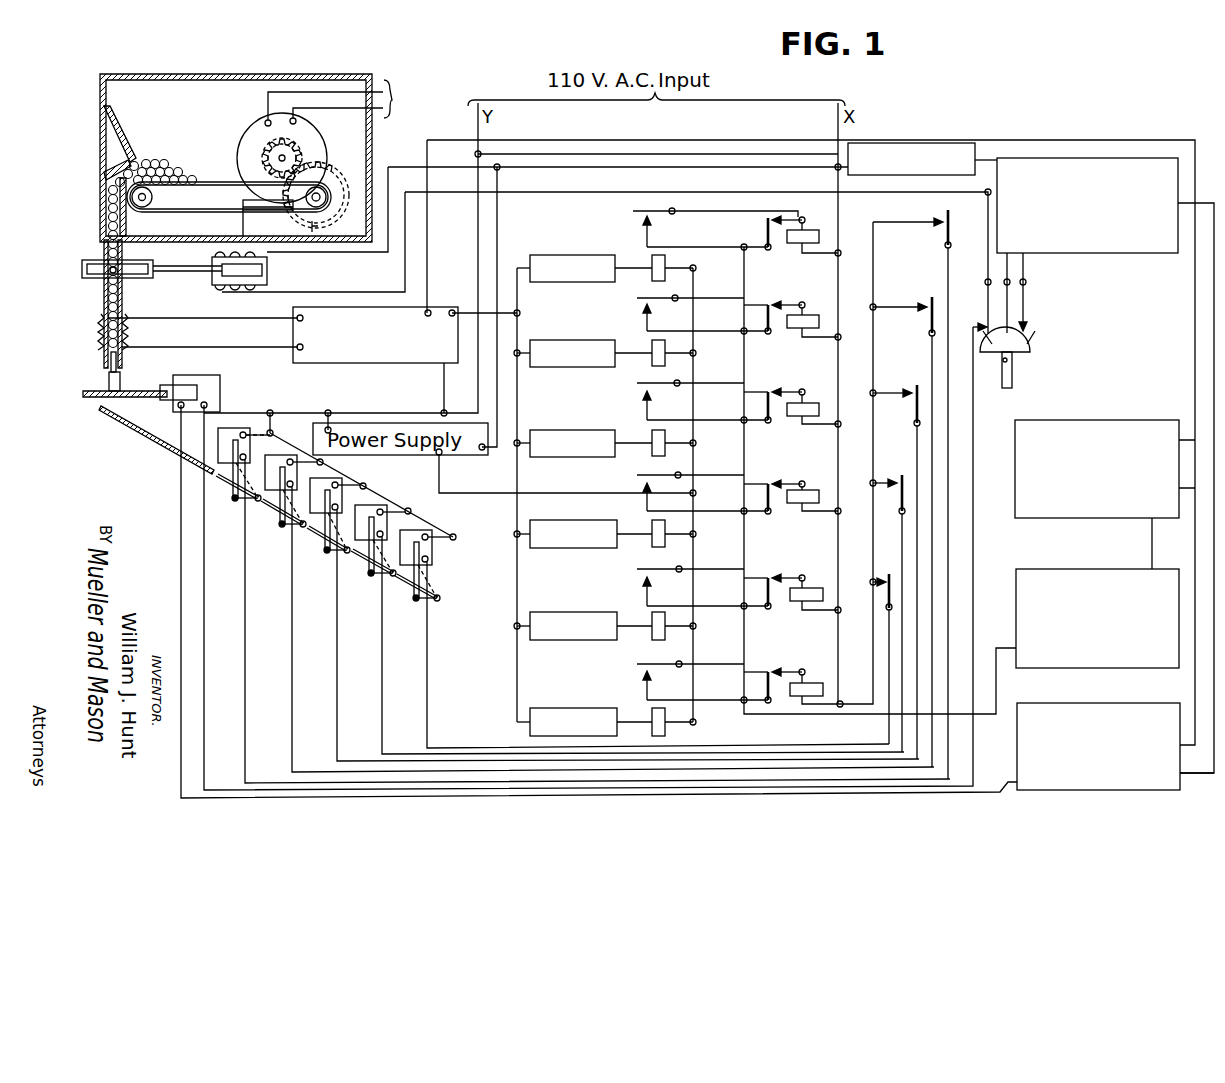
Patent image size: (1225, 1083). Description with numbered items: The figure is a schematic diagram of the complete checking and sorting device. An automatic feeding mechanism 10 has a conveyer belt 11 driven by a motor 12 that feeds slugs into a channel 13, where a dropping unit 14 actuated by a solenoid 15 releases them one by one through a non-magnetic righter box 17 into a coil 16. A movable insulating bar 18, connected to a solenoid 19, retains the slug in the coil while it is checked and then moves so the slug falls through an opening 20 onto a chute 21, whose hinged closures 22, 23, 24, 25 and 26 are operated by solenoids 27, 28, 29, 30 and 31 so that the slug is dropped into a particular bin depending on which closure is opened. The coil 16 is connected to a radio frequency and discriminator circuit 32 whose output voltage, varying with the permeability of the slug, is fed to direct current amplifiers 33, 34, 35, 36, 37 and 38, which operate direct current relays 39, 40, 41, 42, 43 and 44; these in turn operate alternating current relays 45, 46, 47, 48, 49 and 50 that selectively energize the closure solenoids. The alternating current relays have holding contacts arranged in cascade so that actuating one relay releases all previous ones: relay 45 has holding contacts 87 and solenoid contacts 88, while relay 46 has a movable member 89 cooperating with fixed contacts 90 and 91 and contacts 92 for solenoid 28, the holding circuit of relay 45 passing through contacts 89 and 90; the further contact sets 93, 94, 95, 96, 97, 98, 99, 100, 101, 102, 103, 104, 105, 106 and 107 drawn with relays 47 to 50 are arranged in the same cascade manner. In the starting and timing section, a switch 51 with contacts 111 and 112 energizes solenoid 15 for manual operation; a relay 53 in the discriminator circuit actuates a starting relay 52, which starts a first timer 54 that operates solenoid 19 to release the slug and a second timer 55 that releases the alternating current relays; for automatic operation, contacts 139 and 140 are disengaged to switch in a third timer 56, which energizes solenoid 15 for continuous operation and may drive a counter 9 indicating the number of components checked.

The counter 9 is at (911, 159).
The automatic feeding mechanism 10 is at (243, 90).
The conveyer belt 11 is at (212, 178).
The motor 12 is at (299, 137).
The channel 13 is at (100, 232).
The dropping unit 14 is at (140, 262).
The solenoid 15 is at (268, 276).
The coil 16 is at (127, 324).
The righter box 17 is at (108, 296).
The movable insulating bar 18 is at (128, 391).
The solenoid 19 is at (193, 376).
The opening 20 is at (107, 390).
The chute 21 is at (152, 441).
The hinged closure 22 is at (222, 480).
The hinged closure 23 is at (265, 505).
The hinged closure 24 is at (308, 532).
The hinged closure 25 is at (355, 557).
The hinged closure 26 is at (400, 580).
The solenoid 27 is at (221, 428).
The solenoid 28 is at (270, 456).
The solenoid 29 is at (322, 479).
The solenoid 30 is at (368, 506).
The solenoid 31 is at (414, 531).
The radio frequency and discriminator circuit 32 is at (375, 335).
The direct current amplifier 33 is at (566, 268).
The direct current amplifier 34 is at (566, 353).
The direct current amplifier 35 is at (566, 443).
The direct current amplifier 36 is at (567, 534).
The direct current amplifier 37 is at (567, 626).
The direct current amplifier 38 is at (567, 722).
The direct current relay 39 is at (669, 256).
The direct current relay 40 is at (669, 343).
The direct current relay 41 is at (669, 432).
The direct current relay 42 is at (669, 523).
The direct current relay 43 is at (669, 615).
The direct current relay 44 is at (669, 706).
The alternating current relay 45 is at (813, 238).
The alternating current relay 46 is at (813, 323).
The alternating current relay 47 is at (825, 401).
The alternating current relay 48 is at (825, 494).
The alternating current relay 49 is at (826, 586).
The alternating current relay 50 is at (826, 681).
The switch 51 is at (1010, 390).
The starting relay 52 is at (1097, 469).
The relay 53 is at (446, 348).
The first timer 54 is at (1098, 746).
The second timer 55 is at (1097, 618).
The third timer 56 is at (1087, 205).
The contacts 87 is at (765, 218).
The contacts 88 is at (940, 216).
The movable member 89 is at (771, 300).
The fixed contact 90 is at (760, 303).
The fixed contact 91 is at (781, 301).
The contacts 92 is at (930, 293).
The relay contact 93 is at (771, 390).
The junction 94 is at (761, 391).
The armature 95 is at (781, 390).
The switch 96 is at (914, 386).
The relay contact 97 is at (771, 482).
The junction 98 is at (761, 483).
The armature 99 is at (781, 482).
The switch 100 is at (900, 478).
The relay contact 101 is at (771, 576).
The junction 102 is at (761, 577).
The armature 103 is at (781, 576).
The switch 104 is at (884, 580).
The relay contact 105 is at (771, 670).
The junction 106 is at (761, 671).
The armature 107 is at (781, 670).
The contact 111 is at (986, 292).
The contact 112 is at (976, 322).
The contact 139 is at (1024, 314).
The contact 140 is at (1010, 300).